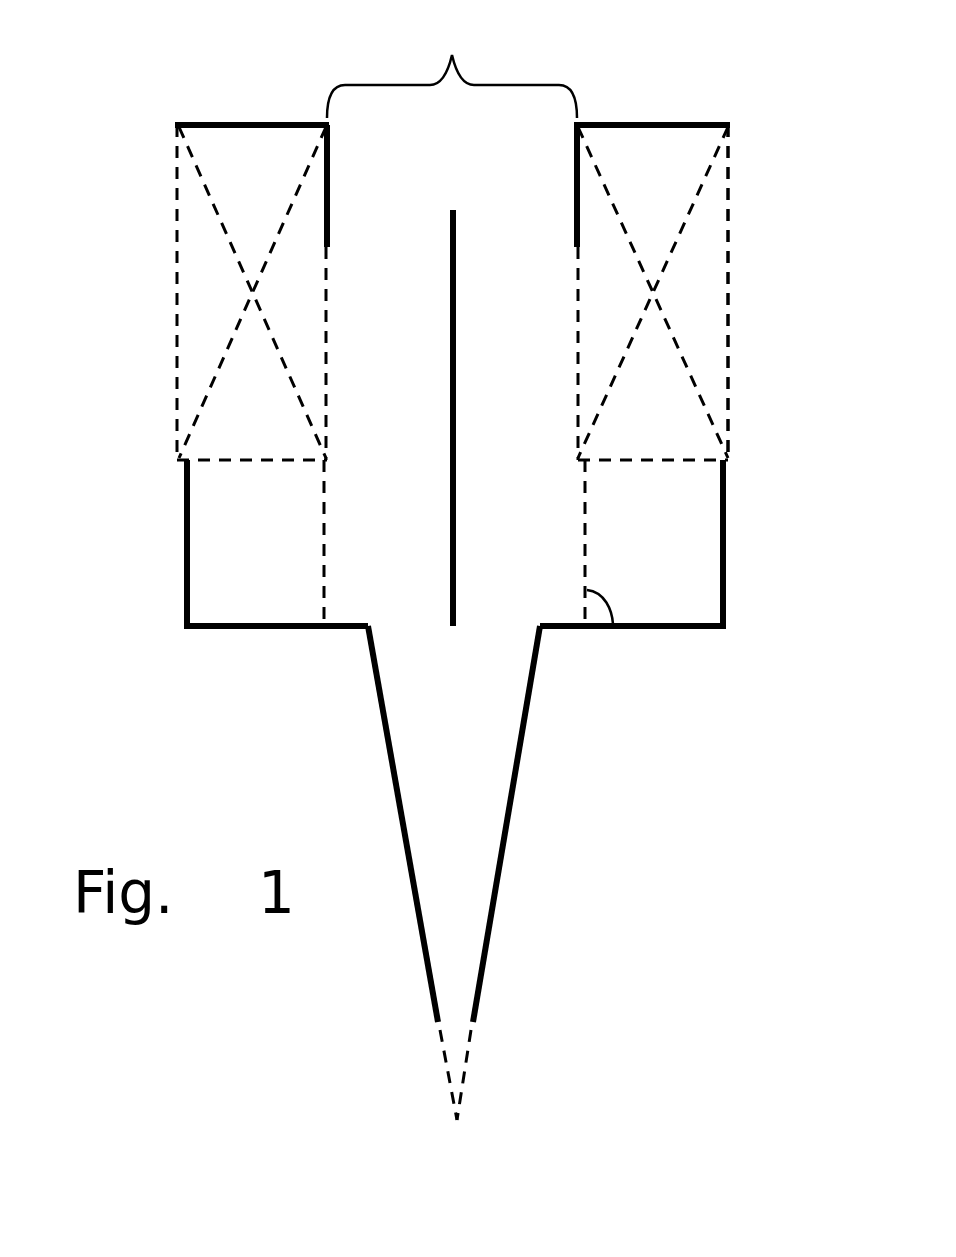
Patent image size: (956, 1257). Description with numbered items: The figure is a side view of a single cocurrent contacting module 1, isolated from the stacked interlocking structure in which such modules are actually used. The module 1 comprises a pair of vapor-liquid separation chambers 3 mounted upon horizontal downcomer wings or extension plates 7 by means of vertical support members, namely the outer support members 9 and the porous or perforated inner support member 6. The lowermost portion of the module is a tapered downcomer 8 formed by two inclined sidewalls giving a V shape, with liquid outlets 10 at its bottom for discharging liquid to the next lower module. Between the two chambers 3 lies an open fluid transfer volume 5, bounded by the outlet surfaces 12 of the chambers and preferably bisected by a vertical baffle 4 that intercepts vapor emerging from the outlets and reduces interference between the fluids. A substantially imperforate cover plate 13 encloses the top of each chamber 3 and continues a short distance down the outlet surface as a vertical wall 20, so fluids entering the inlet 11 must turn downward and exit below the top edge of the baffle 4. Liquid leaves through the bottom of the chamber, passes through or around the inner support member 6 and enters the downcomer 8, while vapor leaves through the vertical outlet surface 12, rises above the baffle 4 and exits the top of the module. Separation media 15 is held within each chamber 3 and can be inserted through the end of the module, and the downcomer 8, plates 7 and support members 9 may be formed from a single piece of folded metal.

The cocurrent contacting module 1 is at (737, 554).
The vapor-liquid separation chamber 3 is at (176, 213).
The vertical baffle 4 is at (457, 233).
The open fluid transfer volume 5 is at (452, 64).
The inner support member 6 is at (608, 627).
The horizontal extension plate 7 is at (233, 630).
The tapered downcomer 8 is at (503, 890).
The outer support member 9 is at (187, 542).
The liquid outlet 10 is at (467, 1065).
The inlet 11 is at (730, 290).
The outlet surface 12 is at (328, 290).
The cover plate 13 is at (258, 123).
The separation media 15 is at (243, 307).
The vertical wall 20 is at (575, 150).